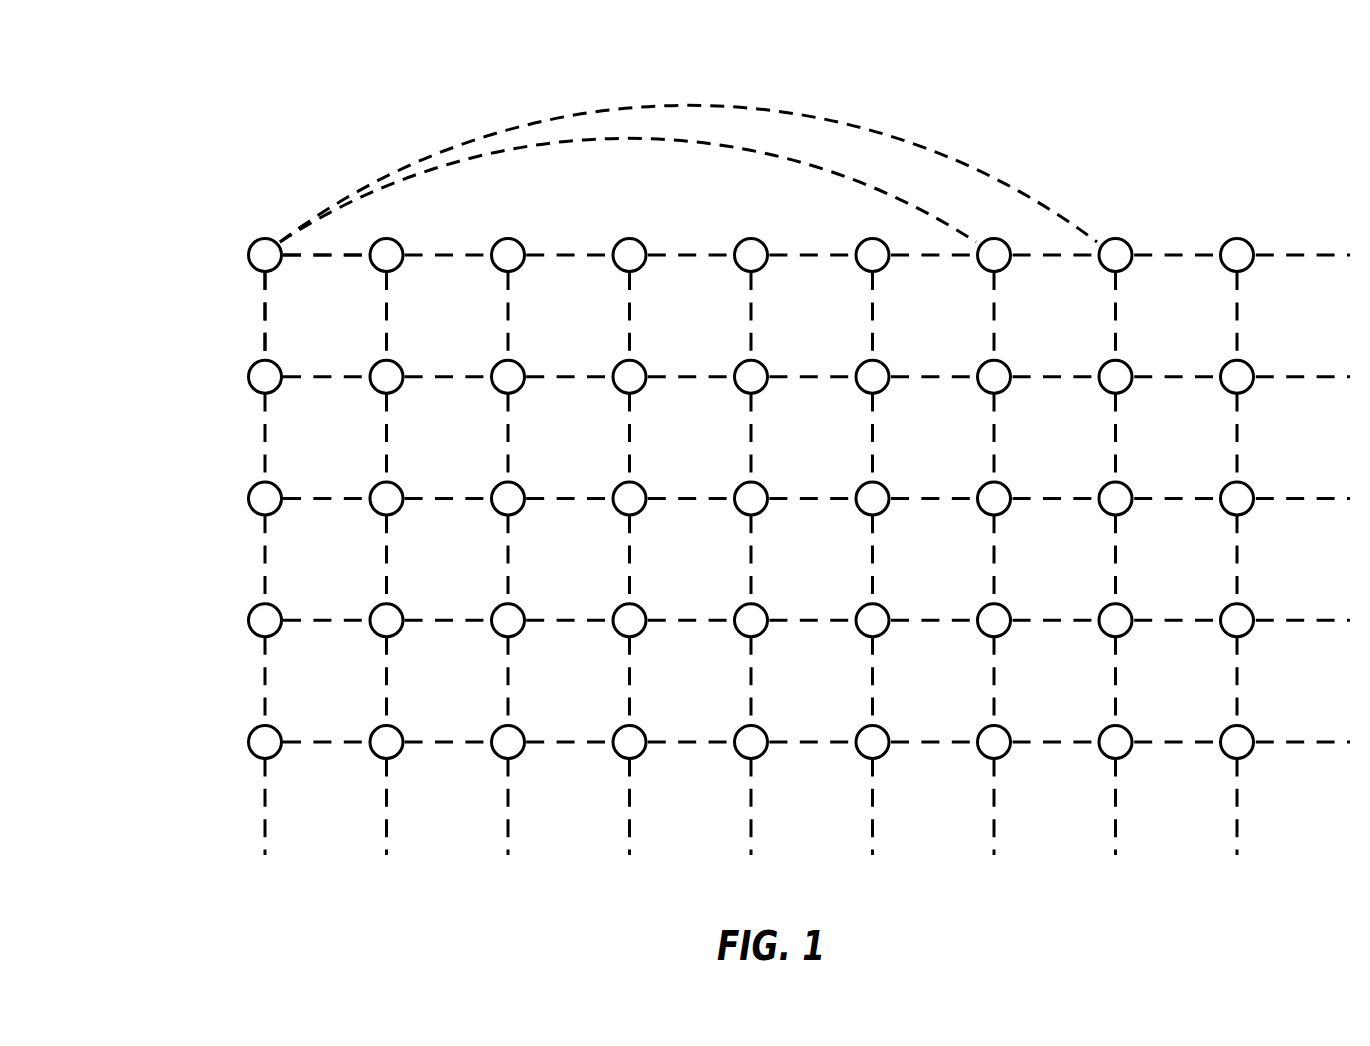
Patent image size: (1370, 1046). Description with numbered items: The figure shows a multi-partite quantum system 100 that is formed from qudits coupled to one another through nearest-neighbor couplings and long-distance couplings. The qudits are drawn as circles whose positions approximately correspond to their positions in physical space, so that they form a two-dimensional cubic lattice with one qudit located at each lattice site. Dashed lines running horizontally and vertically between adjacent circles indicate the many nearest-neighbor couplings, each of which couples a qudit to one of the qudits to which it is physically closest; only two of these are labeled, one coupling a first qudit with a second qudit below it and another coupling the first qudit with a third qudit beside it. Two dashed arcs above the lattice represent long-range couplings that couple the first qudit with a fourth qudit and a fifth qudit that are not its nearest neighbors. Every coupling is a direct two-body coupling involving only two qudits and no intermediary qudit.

The multi-partite quantum system 100 is at (166, 104).